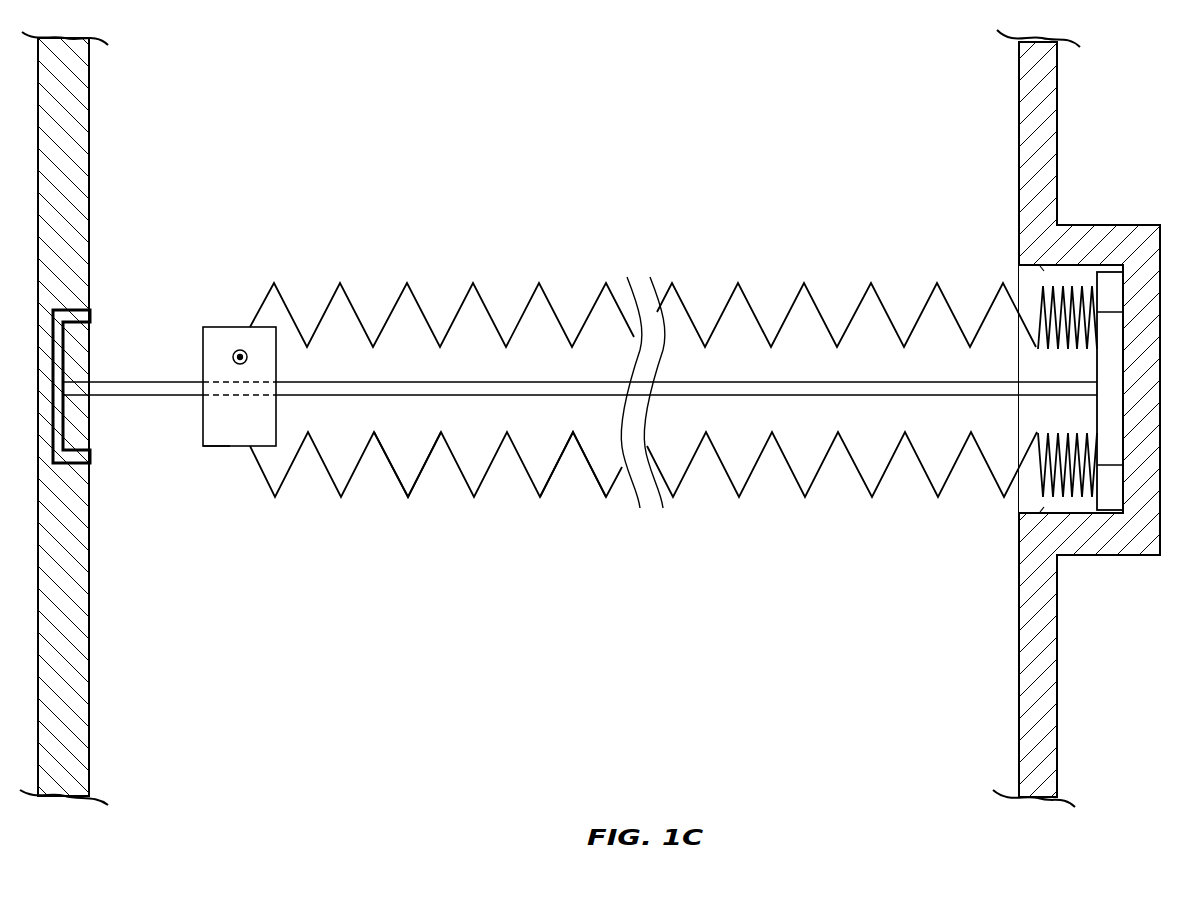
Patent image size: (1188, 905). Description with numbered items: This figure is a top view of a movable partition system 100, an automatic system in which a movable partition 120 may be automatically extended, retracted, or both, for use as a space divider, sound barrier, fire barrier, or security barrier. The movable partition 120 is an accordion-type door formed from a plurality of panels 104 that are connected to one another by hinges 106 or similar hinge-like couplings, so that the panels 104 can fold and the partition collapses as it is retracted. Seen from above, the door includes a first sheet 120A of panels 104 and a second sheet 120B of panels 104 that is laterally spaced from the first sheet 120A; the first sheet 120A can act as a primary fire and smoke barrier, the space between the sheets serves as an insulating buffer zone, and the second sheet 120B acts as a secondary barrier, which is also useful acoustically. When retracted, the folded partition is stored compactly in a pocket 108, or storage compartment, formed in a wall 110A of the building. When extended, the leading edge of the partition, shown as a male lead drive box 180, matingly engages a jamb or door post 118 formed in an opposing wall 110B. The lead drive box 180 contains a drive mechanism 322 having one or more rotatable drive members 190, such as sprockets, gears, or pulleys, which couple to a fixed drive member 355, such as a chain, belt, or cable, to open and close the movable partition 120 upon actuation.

The movable partition system 100 is at (453, 213).
The panels 104 is at (433, 473).
The hinges 106 is at (593, 497).
The pocket 108 is at (1020, 507).
The wall 110A is at (1017, 700).
The wall 110B is at (88, 668).
The jamb 118 is at (82, 414).
The movable partition 120 is at (496, 374).
The first sheet 120A is at (833, 293).
The second sheet 120B is at (755, 487).
The lead drive box 180 is at (203, 335).
The rotatable drive members 190 is at (240, 348).
The drive mechanism 322 is at (247, 475).
The fixed drive member 355 is at (770, 382).